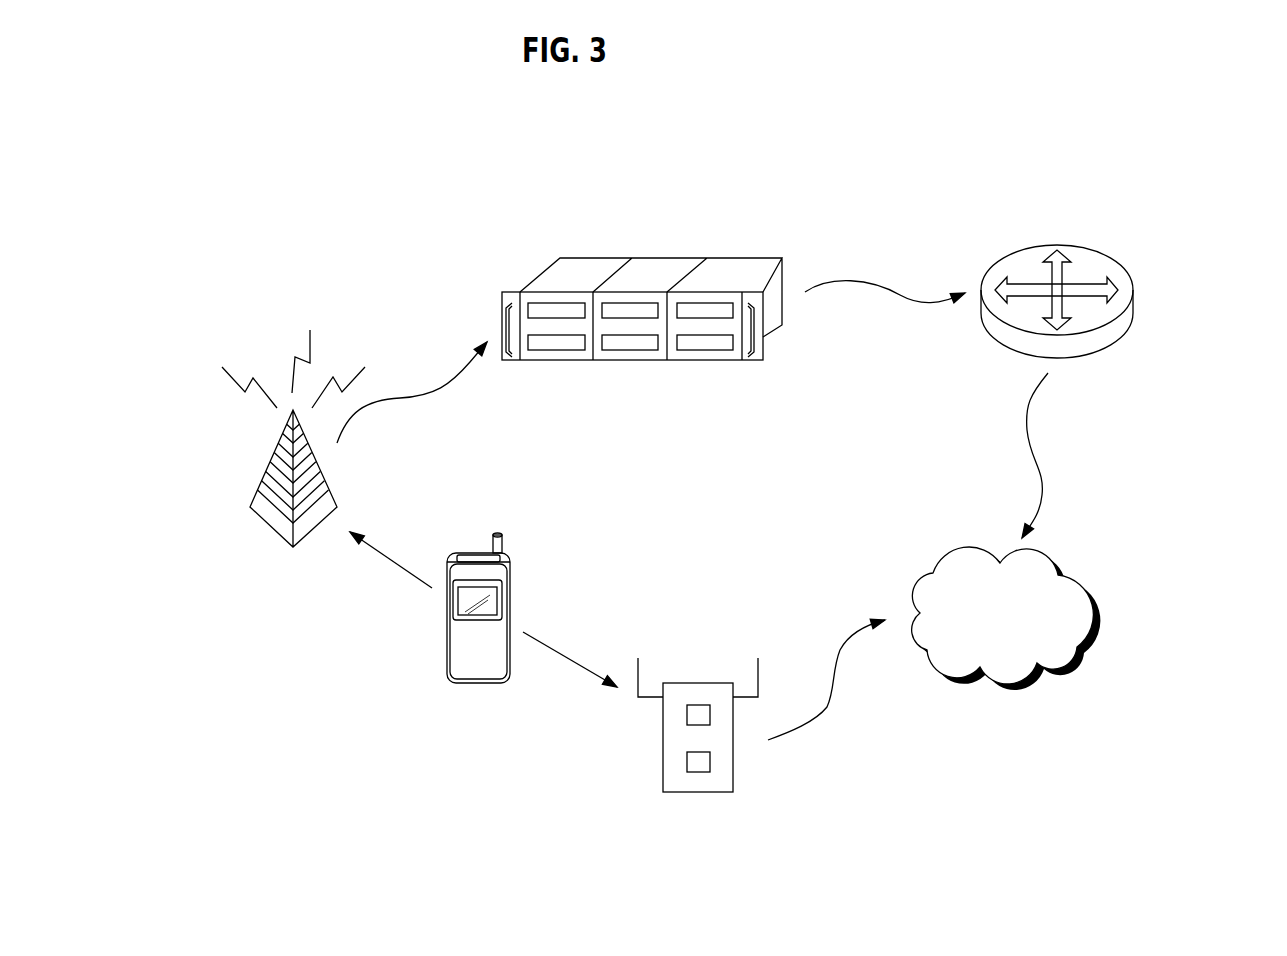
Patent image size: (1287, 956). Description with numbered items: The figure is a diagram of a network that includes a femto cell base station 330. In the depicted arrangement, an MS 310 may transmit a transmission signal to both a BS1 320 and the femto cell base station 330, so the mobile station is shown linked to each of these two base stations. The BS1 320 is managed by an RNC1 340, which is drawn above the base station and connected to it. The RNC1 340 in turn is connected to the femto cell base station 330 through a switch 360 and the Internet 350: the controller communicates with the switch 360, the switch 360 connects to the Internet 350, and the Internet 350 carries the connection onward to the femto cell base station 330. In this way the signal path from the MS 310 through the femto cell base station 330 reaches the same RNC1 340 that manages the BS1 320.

The MS 310 is at (477, 553).
The BS1 320 is at (265, 521).
The femto cell base station 330 is at (698, 682).
The RNC1 340 is at (560, 258).
The Internet 350 is at (1062, 575).
The switch 360 is at (1133, 290).